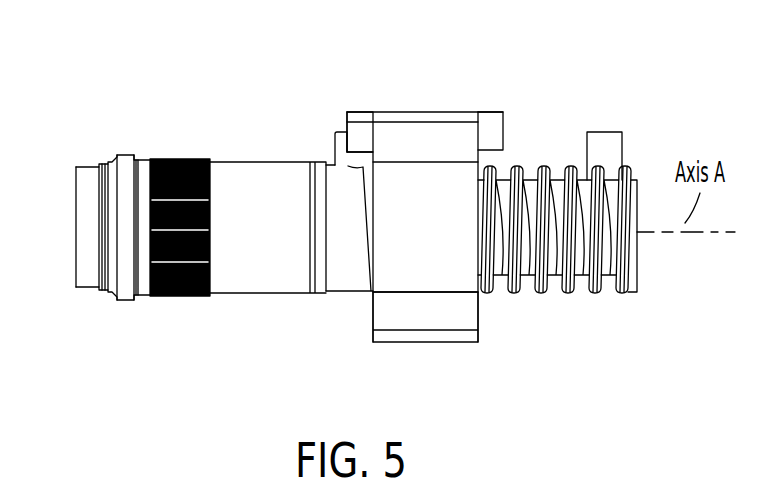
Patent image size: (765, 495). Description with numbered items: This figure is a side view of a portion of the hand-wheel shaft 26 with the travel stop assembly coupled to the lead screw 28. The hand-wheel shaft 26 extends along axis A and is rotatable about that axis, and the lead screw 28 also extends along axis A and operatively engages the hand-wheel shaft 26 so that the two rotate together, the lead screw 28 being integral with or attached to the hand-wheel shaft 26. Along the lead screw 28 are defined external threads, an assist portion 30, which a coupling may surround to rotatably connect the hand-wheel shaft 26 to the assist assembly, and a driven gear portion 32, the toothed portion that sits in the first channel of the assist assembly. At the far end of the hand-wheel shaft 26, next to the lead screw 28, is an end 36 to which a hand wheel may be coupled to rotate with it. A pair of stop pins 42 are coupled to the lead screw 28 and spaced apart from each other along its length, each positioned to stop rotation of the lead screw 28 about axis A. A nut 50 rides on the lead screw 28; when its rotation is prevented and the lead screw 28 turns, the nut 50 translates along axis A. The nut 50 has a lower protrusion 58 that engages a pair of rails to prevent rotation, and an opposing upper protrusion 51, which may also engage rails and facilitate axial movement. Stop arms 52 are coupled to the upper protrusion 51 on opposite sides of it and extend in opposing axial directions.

The hand-wheel shaft 26 is at (250, 305).
The lead screw 28 is at (553, 291).
The assist portion 30 is at (243, 180).
The driven gear portion 32 is at (178, 162).
The end 36 is at (74, 200).
The stop pins 42 is at (342, 145).
The nut 50 is at (432, 106).
The upper protrusion 51 is at (408, 135).
The stop arms 52 is at (360, 133).
The lower protrusion 58 is at (427, 320).